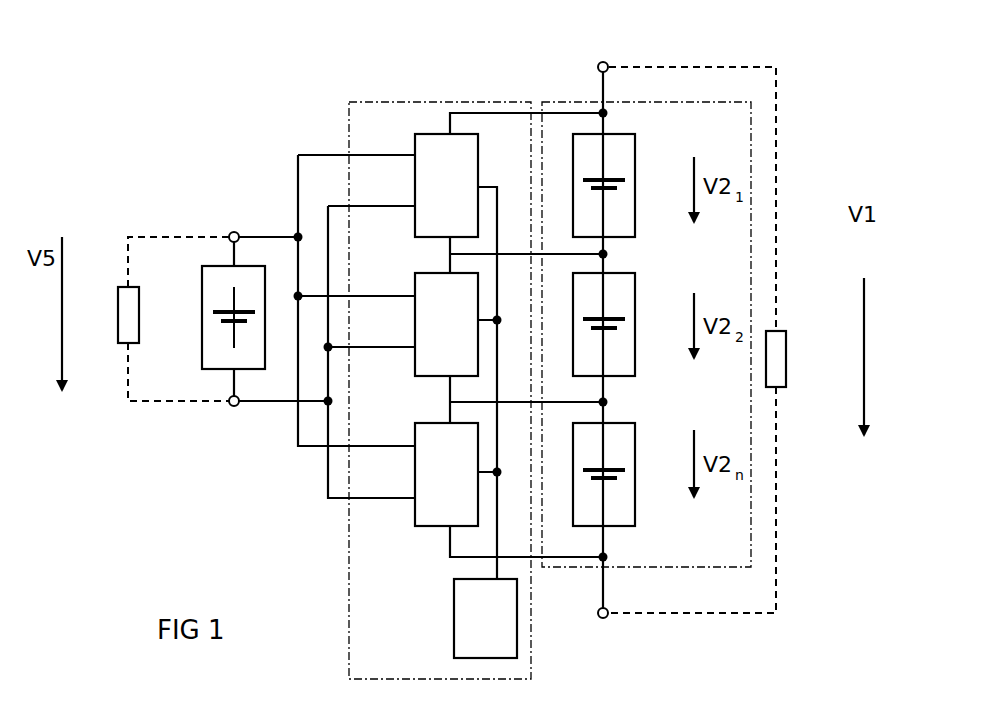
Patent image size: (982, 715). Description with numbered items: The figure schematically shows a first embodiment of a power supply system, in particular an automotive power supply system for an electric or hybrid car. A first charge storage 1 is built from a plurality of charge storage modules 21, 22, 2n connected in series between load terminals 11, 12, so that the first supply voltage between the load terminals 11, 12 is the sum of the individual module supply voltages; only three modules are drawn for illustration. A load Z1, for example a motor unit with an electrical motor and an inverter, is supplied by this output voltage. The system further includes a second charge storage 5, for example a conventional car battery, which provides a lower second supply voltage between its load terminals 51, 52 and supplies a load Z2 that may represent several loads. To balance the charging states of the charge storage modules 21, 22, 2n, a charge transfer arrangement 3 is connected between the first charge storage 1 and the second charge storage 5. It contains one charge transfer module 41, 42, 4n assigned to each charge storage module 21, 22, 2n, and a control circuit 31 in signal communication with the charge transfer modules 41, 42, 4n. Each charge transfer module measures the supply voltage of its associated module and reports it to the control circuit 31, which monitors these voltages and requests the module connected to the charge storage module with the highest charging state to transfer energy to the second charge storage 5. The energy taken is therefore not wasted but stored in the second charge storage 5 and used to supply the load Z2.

The first charge storage 1 is at (572, 100).
The charge transfer arrangement 3 is at (427, 100).
The load terminal 11 is at (604, 61).
The load terminal 12 is at (605, 619).
The charge storage module 21 is at (638, 175).
The charge storage module 22 is at (638, 315).
The charge storage module 2n is at (638, 465).
The charge transfer module 41 is at (414, 186).
The charge transfer module 42 is at (414, 330).
The charge transfer module 4n is at (414, 480).
The control circuit 31 is at (454, 617).
The second charge storage 5 is at (201, 314).
The load terminal 51 is at (236, 230).
The load terminal 52 is at (234, 408).
The load Z1 is at (787, 358).
The load Z2 is at (117, 315).